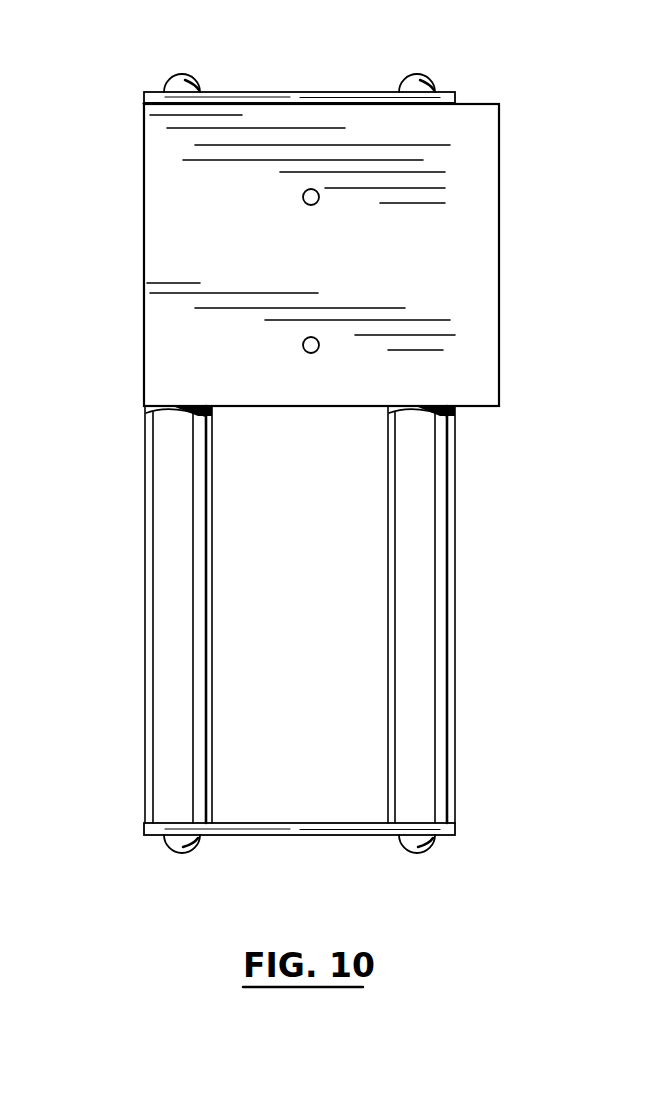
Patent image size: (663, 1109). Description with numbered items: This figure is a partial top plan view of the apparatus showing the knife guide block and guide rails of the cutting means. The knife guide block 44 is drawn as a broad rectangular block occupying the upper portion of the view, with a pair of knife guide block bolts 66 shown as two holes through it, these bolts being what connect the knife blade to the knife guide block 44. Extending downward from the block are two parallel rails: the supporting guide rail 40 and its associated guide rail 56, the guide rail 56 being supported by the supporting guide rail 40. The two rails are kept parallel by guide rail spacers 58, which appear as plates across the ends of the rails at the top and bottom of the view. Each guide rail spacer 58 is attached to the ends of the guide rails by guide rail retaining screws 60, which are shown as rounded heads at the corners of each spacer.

The supporting guide rail 40 is at (426, 555).
The knife guide block 44 is at (165, 163).
The guide rail 56 is at (175, 633).
The guide rail spacer 58 is at (302, 92).
The guide rail retaining screw 60 is at (181, 75).
The knife guide block bolt 66 is at (320, 340).